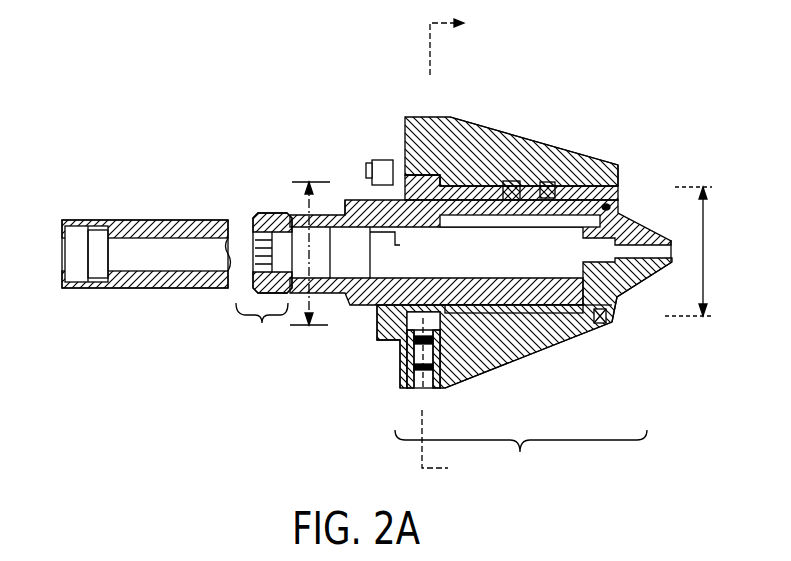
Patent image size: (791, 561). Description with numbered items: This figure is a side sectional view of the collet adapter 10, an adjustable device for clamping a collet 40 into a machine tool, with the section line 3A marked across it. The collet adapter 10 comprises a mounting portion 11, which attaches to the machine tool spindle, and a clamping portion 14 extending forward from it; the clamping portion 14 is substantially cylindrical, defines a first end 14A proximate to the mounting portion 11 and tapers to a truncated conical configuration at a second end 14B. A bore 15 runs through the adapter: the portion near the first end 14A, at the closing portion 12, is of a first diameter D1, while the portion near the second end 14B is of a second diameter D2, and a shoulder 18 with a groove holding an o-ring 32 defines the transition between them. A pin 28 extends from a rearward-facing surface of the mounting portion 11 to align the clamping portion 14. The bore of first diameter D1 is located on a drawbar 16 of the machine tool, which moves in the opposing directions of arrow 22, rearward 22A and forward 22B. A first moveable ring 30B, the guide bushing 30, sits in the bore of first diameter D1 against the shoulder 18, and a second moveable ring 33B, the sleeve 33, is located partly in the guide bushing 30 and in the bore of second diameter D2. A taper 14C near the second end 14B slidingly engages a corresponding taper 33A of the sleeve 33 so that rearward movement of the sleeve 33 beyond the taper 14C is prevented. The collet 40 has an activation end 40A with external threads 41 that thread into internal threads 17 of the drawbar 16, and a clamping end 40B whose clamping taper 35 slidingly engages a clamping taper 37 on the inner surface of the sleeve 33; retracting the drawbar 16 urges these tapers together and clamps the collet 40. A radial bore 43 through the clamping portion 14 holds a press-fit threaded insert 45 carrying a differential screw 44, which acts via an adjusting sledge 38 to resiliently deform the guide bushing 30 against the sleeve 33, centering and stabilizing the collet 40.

The collet adapter 10 is at (526, 464).
The mounting portion 11 is at (400, 358).
The closing portion 12 is at (372, 307).
The clamping portion 14 is at (428, 117).
The first end 14A is at (381, 136).
The second end 14B is at (600, 136).
The taper 14C is at (584, 165).
The bore 15 is at (634, 196).
The drawbar 16 is at (265, 212).
The internal threads 17 is at (470, 250).
The shoulder 18 is at (470, 172).
The arrow 22 is at (118, 312).
The rearward direction 22A is at (150, 306).
The forward direction 22B is at (197, 300).
The pin 28 is at (367, 166).
The guide bushing 30 is at (470, 172).
The first moveable ring 30B is at (497, 172).
The o-ring 32 is at (540, 185).
The sleeve 33 is at (607, 318).
The taper of the sleeve 33A is at (565, 318).
The second moveable ring 33B is at (612, 336).
The clamping taper 35 is at (610, 207).
The clamping taper 37 is at (590, 320).
The adjusting sledge 38 is at (499, 368).
The collet 40 is at (644, 300).
The activation end 40A is at (352, 180).
The clamping end 40B is at (645, 312).
The external threads 41 is at (375, 230).
The radial bore 43 is at (415, 410).
The differential screws 44 is at (410, 387).
The threaded insert 45 is at (436, 388).
The first diameter D1 is at (308, 201).
The second diameter D2 is at (710, 251).
The section line 3A is at (458, 250).